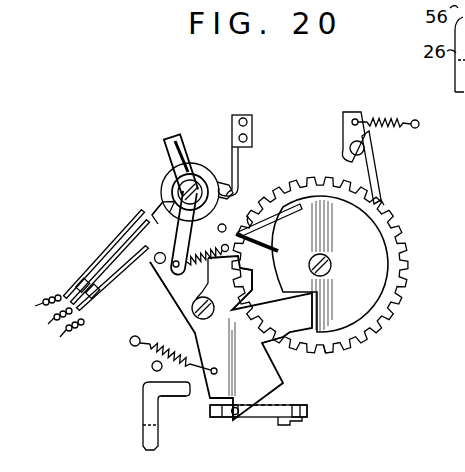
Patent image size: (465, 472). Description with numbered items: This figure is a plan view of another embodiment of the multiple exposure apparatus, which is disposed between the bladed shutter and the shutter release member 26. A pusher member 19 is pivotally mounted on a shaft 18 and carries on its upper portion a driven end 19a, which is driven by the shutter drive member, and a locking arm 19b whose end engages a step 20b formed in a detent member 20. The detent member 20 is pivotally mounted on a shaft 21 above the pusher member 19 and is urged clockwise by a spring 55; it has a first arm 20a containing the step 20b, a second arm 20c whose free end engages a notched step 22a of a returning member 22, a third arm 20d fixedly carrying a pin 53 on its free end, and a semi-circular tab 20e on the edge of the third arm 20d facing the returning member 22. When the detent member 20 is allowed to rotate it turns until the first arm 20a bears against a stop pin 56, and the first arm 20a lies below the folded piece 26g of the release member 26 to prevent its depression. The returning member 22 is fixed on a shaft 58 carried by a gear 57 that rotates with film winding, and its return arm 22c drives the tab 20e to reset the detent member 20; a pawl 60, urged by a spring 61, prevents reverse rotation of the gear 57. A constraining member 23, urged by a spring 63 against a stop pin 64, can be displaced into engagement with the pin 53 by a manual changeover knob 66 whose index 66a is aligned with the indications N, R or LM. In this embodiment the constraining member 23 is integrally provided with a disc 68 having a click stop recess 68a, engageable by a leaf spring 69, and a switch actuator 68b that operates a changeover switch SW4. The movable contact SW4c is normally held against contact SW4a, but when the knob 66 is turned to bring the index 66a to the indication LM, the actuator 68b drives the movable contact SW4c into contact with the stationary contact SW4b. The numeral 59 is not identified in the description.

The shaft 18 is at (298, 421).
The pusher member 19 is at (268, 418).
The driven end 19a is at (309, 413).
The locking arm 19b is at (216, 418).
The detent member 20 is at (200, 326).
The first arm 20a is at (284, 384).
The step 20b is at (233, 424).
The second arm 20c is at (286, 346).
The third arm 20d is at (186, 320).
The semi-circular tab 20e is at (237, 275).
The shaft 21 is at (214, 313).
The returning member 22 is at (406, 257).
The notched step 22a is at (330, 346).
The return arm 22c is at (249, 216).
The constraining member 23 is at (175, 290).
The shutter release member 26 is at (143, 411).
The folded piece 26g is at (176, 394).
The pin 53 is at (157, 264).
The spring 55 is at (148, 352).
The stop pin 56 is at (153, 371).
The gear 57 is at (385, 206).
The shaft 58 is at (332, 265).
The pawl pivot 59 is at (365, 150).
The pawl 60 is at (372, 180).
The spring 61 is at (384, 119).
The spring 63 is at (236, 258).
The stop pin 64 is at (226, 229).
The manual changeover knob 66 is at (172, 186).
The index 66a is at (178, 139).
The disc 68 is at (163, 167).
The click stop recess 68a is at (215, 178).
The switch actuator 68b is at (158, 212).
The leaf spring 69 is at (241, 165).
The changeover switch SW4 is at (80, 262).
The contact SW4a is at (112, 300).
The stationary contact SW4b is at (127, 242).
The movable contact SW4c is at (140, 214).
The indication N is at (121, 168).
The indication R is at (140, 139).
The indication LM is at (169, 120).